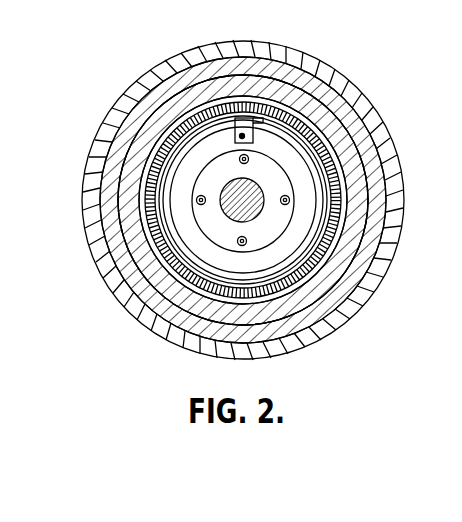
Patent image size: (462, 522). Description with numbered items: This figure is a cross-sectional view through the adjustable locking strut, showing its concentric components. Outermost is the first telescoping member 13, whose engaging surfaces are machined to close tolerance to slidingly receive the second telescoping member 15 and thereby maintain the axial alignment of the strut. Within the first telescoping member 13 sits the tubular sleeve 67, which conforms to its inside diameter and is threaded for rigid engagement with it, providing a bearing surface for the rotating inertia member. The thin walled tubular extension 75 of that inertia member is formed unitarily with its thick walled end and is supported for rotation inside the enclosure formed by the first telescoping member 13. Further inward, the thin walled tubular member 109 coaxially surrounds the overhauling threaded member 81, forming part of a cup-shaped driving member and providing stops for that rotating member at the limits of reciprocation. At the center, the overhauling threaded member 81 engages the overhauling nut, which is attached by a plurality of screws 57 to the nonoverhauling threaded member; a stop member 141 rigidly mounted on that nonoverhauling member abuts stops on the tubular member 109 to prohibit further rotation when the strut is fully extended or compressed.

The first telescoping member 13 is at (267, 58).
The second telescoping member 15 is at (304, 52).
The tubular sleeve 67 is at (313, 104).
The thin walled tubular extension 75 is at (333, 147).
The thin walled tubular member 109 is at (337, 175).
The stop member 141 is at (253, 128).
The overhauling threaded member 81 is at (238, 184).
The screws 57 is at (248, 162).